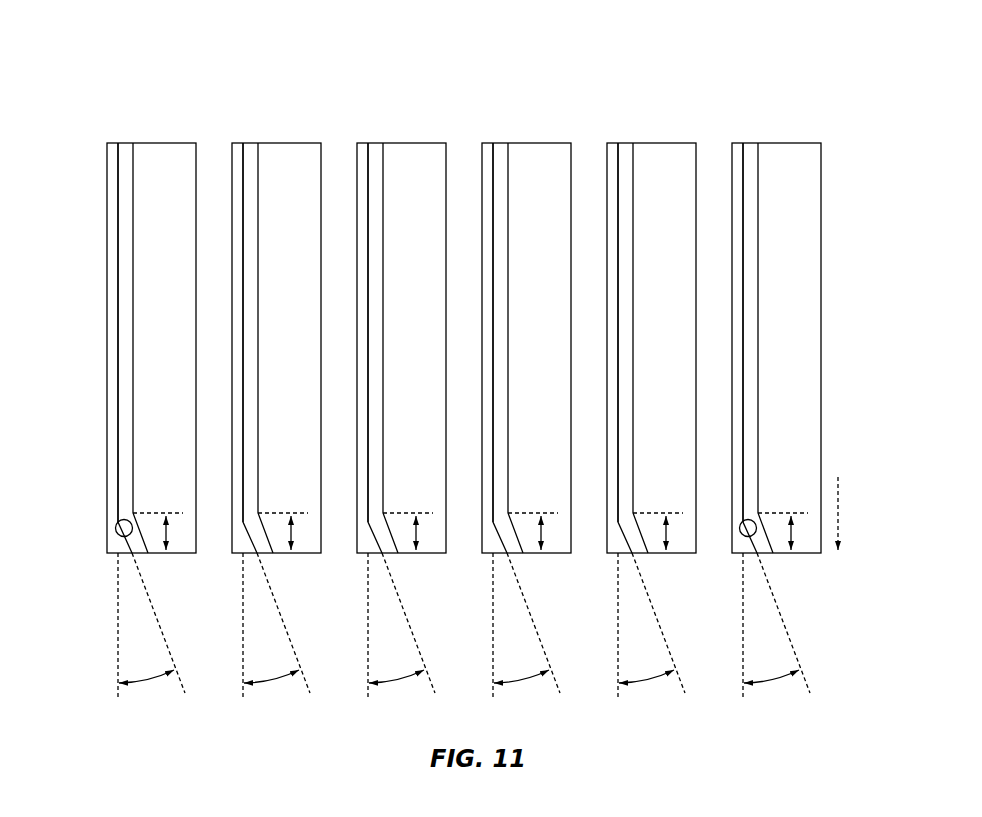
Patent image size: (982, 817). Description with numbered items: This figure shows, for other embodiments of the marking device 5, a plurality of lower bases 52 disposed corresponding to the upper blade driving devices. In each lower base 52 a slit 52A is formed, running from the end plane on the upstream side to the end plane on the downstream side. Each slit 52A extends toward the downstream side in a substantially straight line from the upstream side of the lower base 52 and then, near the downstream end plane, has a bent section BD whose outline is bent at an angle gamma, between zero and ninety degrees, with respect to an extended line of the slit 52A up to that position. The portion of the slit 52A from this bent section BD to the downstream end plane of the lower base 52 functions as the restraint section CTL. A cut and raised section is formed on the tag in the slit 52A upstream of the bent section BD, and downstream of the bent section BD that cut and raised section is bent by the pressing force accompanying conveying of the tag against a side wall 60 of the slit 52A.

The marking device 5 is at (771, 77).
The lower base 52 is at (155, 357).
The slit 52A is at (128, 317).
The side wall 60 is at (109, 542).
The bent section BD is at (129, 513).
The restraint section CTL is at (181, 550).